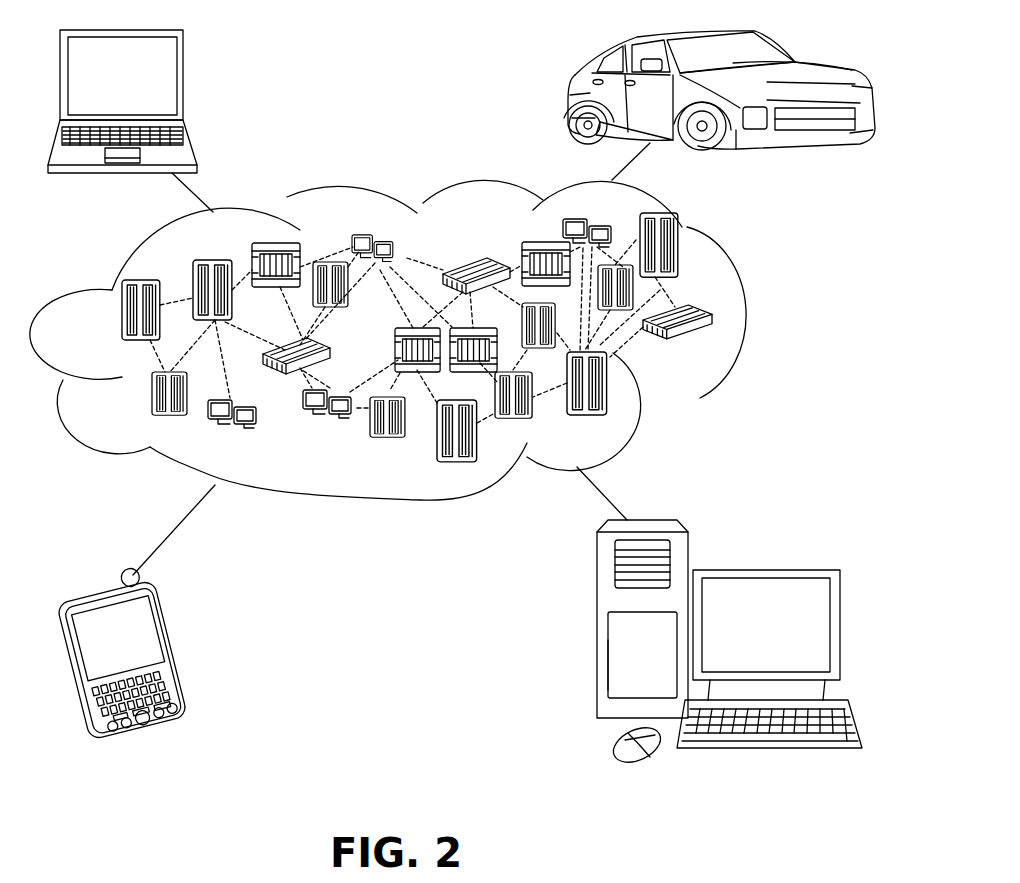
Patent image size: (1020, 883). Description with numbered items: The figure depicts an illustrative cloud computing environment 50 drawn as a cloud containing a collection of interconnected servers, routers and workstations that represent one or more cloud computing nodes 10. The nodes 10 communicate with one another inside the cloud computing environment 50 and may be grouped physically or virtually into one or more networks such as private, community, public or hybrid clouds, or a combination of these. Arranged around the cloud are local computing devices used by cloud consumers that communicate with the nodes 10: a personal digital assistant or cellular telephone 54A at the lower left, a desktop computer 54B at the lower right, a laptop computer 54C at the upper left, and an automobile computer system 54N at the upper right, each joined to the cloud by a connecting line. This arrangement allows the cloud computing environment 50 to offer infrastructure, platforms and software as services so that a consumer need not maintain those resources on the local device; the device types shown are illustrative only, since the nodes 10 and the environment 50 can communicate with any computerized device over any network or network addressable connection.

The cloud computing node 10 is at (716, 346).
The cloud computing environment 50 is at (763, 320).
The personal digital assistant or cellular telephone 54A is at (172, 650).
The desktop computer 54B is at (765, 570).
The laptop computer 54C is at (183, 80).
The automobile computer system 54N is at (568, 93).